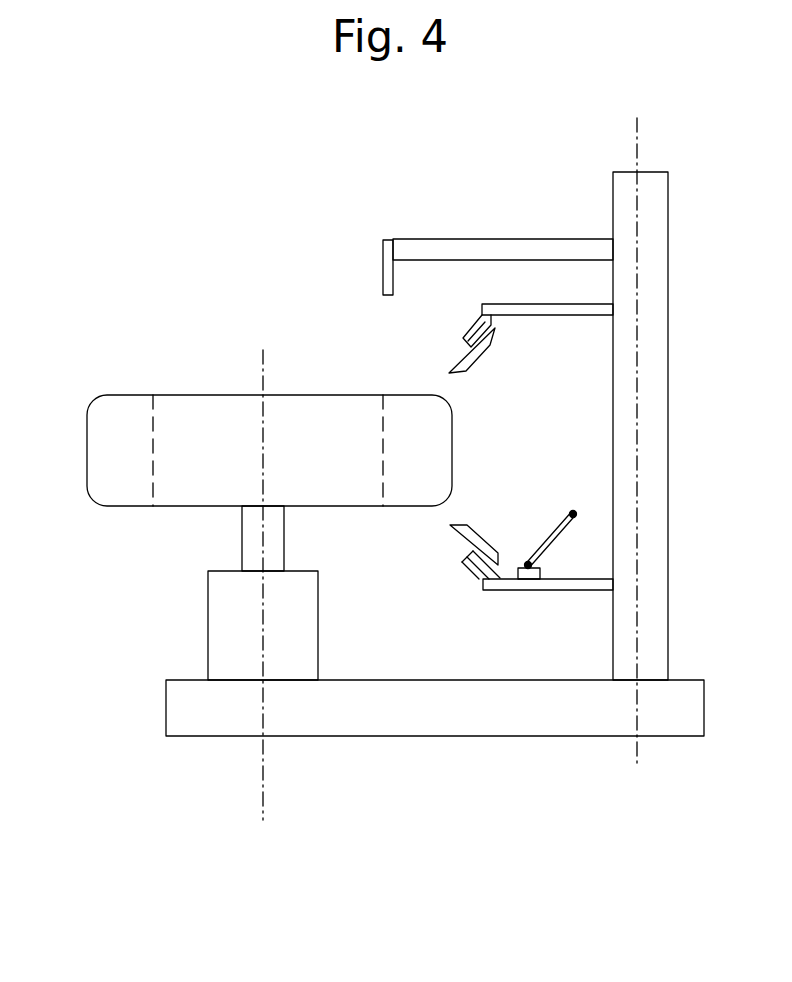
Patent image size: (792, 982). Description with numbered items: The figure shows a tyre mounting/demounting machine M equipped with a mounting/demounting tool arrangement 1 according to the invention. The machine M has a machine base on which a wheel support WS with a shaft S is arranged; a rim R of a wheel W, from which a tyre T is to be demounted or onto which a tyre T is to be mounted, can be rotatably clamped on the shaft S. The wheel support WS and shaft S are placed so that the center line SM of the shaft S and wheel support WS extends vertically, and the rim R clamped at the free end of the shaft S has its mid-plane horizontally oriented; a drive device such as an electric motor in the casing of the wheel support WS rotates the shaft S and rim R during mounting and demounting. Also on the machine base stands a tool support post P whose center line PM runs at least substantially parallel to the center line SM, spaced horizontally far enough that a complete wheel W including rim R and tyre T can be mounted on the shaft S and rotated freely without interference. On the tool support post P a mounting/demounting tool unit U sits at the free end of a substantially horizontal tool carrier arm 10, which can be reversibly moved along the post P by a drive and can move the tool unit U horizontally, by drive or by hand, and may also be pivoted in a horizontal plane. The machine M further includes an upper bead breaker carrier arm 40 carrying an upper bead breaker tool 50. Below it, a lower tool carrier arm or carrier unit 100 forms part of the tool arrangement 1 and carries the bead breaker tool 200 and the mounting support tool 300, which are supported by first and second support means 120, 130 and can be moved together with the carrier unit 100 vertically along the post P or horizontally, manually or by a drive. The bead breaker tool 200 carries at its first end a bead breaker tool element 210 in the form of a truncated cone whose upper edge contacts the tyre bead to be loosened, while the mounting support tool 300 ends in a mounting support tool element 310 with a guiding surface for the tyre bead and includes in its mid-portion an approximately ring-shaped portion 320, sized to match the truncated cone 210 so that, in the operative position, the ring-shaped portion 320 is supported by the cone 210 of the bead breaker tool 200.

The tyre mounting/demounting machine M is at (103, 205).
The mounting/demounting tool arrangement 1 is at (685, 500).
The tool support post P is at (670, 257).
The center line of tool support post PM is at (637, 113).
The wheel W is at (83, 360).
The tyre T is at (95, 430).
The wheel rim R is at (173, 405).
The shaft S is at (242, 537).
The wheel support WS is at (208, 627).
The center line of shaft and wheel support SM is at (277, 827).
The mounting/demounting tool unit U is at (375, 215).
The tool carrier arm 10 is at (568, 235).
The upper bead breaker carrier arm 40 is at (547, 303).
The upper bead breaker tool 50 is at (447, 338).
The lower tool carrier arm or carrier unit 100 is at (550, 606).
The first support means 120 is at (482, 581).
The second support means or hinge 130 is at (538, 568).
The bead breaker tool 200 is at (450, 538).
The bead breaker tool element 210 is at (485, 542).
The mounting support tool 300 is at (528, 489).
The mounting support tool element 310 is at (573, 512).
The ring-shaped portion 320 is at (527, 562).